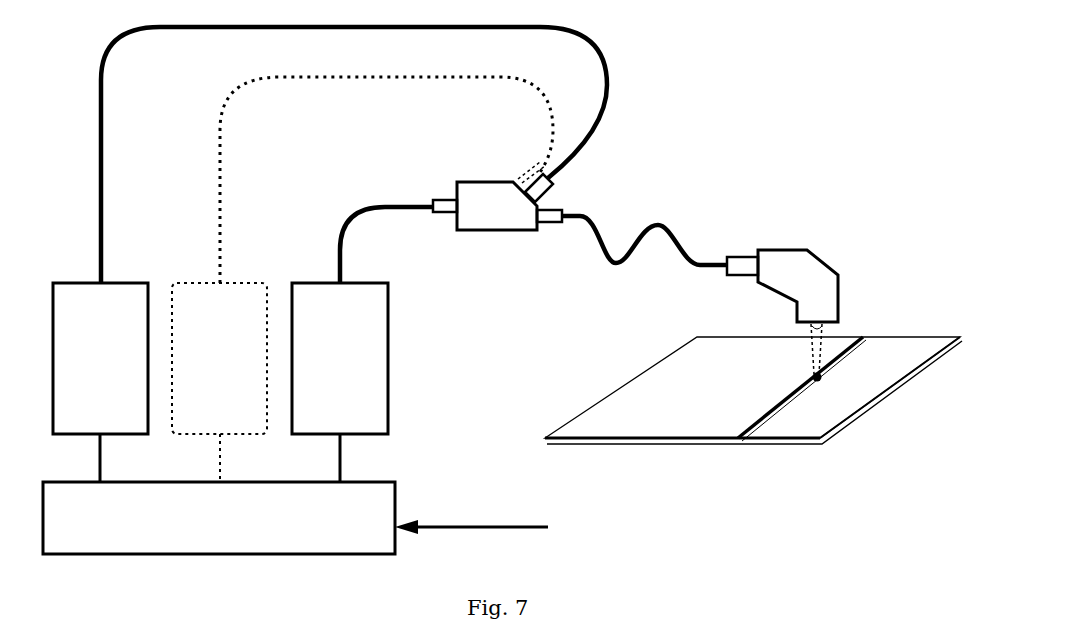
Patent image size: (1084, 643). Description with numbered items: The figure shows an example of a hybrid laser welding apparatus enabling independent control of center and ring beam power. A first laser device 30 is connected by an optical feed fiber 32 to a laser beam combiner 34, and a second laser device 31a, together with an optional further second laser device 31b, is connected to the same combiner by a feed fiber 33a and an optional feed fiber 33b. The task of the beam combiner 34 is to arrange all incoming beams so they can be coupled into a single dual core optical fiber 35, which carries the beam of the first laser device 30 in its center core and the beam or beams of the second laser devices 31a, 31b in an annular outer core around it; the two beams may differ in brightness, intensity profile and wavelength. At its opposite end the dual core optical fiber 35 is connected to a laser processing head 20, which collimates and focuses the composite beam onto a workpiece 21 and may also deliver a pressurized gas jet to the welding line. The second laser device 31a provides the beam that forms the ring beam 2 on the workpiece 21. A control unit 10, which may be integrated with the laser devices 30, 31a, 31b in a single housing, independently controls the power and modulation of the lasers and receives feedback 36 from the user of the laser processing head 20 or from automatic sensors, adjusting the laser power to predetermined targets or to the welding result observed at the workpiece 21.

The ring beam 2 is at (824, 354).
The control unit 10 is at (397, 490).
The laser processing head 20 is at (818, 250).
The workpiece 21 is at (649, 398).
The first laser device 30 is at (112, 396).
The second laser device 31a is at (362, 396).
The optional second laser device 31b is at (240, 396).
The optical feed fiber 32 is at (106, 199).
The feed fiber 33a is at (381, 206).
The optional feed fiber 33b is at (219, 146).
The laser beam combiner 34 is at (488, 182).
The dual core optical fiber 35 is at (614, 268).
The feedback 36 is at (489, 527).